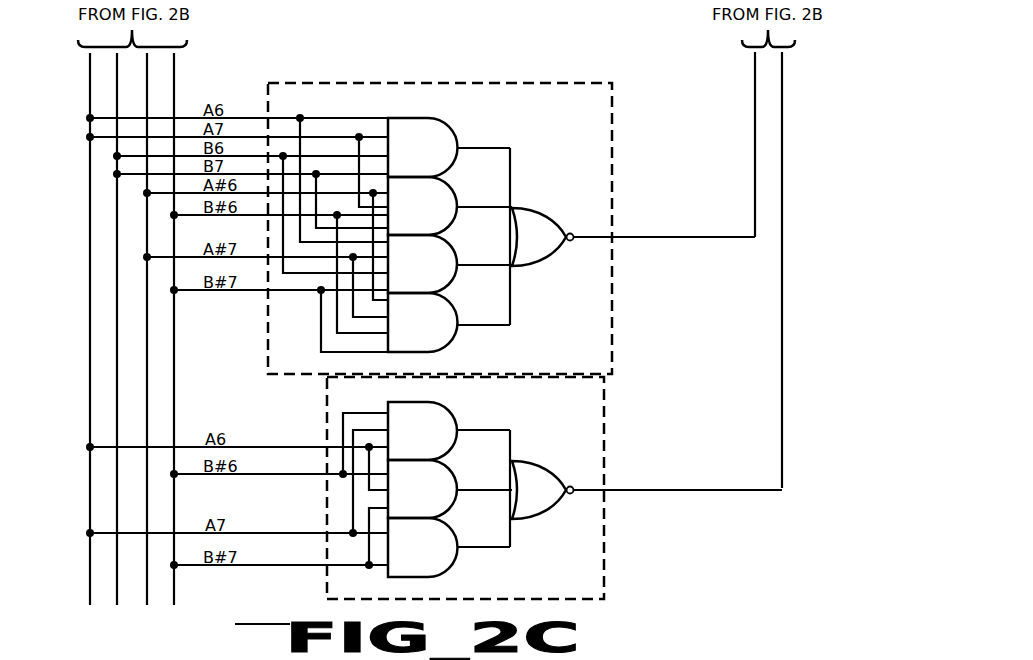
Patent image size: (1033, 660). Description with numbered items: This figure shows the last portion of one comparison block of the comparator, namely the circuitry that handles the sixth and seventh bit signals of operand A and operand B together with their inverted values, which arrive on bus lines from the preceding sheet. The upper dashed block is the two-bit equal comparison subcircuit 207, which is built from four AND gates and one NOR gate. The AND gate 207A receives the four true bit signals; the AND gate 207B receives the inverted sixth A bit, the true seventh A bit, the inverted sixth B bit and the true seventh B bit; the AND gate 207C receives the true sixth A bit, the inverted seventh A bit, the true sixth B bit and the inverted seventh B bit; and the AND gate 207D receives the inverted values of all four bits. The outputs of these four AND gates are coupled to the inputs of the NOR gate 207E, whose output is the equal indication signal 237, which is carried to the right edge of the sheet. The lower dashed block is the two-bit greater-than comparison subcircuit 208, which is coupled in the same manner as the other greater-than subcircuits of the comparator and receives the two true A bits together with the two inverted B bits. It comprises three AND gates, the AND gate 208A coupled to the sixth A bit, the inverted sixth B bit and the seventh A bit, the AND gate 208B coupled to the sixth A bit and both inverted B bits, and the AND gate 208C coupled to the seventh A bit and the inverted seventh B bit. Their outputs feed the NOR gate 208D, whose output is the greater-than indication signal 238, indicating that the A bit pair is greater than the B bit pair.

The 2-bit equal comparison subcircuit 207 is at (586, 114).
The AND gate 207A is at (453, 133).
The AND gate 207B is at (453, 195).
The AND gate 207C is at (450, 280).
The AND gate 207D is at (450, 343).
The NOR gate 207E is at (550, 211).
The equal indication signal 237 is at (682, 234).
The 2-bit greater-than comparison subcircuit 208 is at (593, 407).
The AND gate 208A is at (452, 416).
The AND gate 208B is at (453, 502).
The AND gate 208C is at (452, 566).
The NOR gate 208D is at (547, 510).
The greater-than indication signal 238 is at (665, 486).